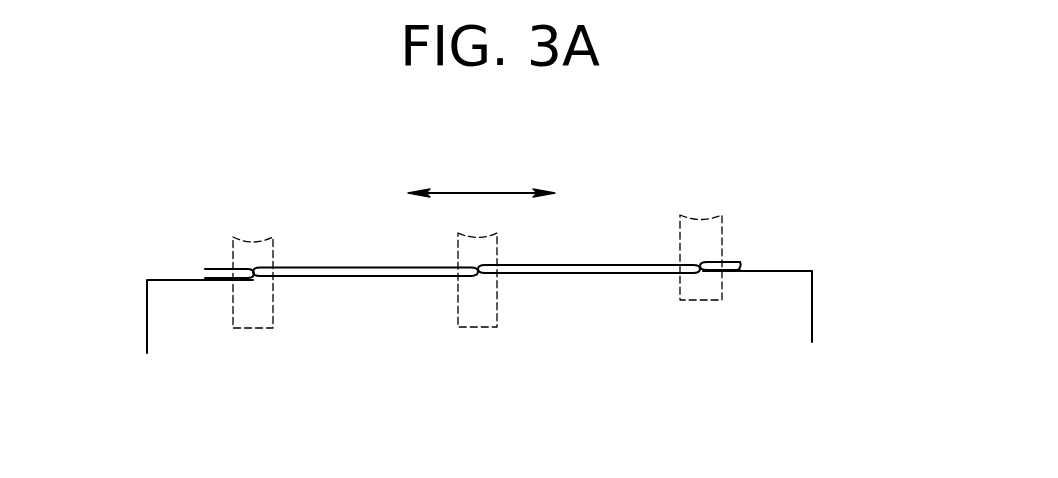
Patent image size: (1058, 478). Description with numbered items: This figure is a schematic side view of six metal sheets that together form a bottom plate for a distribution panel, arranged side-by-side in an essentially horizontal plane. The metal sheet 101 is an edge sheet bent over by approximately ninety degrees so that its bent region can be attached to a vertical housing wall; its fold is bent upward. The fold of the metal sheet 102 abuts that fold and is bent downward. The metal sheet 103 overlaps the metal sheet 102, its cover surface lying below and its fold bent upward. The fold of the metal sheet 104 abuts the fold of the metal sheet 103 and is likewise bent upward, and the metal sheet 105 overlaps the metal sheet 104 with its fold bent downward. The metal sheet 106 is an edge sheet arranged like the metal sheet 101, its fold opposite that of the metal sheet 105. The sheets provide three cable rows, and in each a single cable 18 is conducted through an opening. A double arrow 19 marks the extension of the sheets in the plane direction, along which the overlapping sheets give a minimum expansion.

The metal sheet 101 is at (170, 279).
The metal sheet 102 is at (314, 268).
The metal sheet 103 is at (357, 276).
The metal sheet 104 is at (543, 276).
The metal sheet 105 is at (620, 268).
The metal sheet 106 is at (758, 272).
The cable 18 is at (253, 241).
The double arrow 19 is at (453, 193).